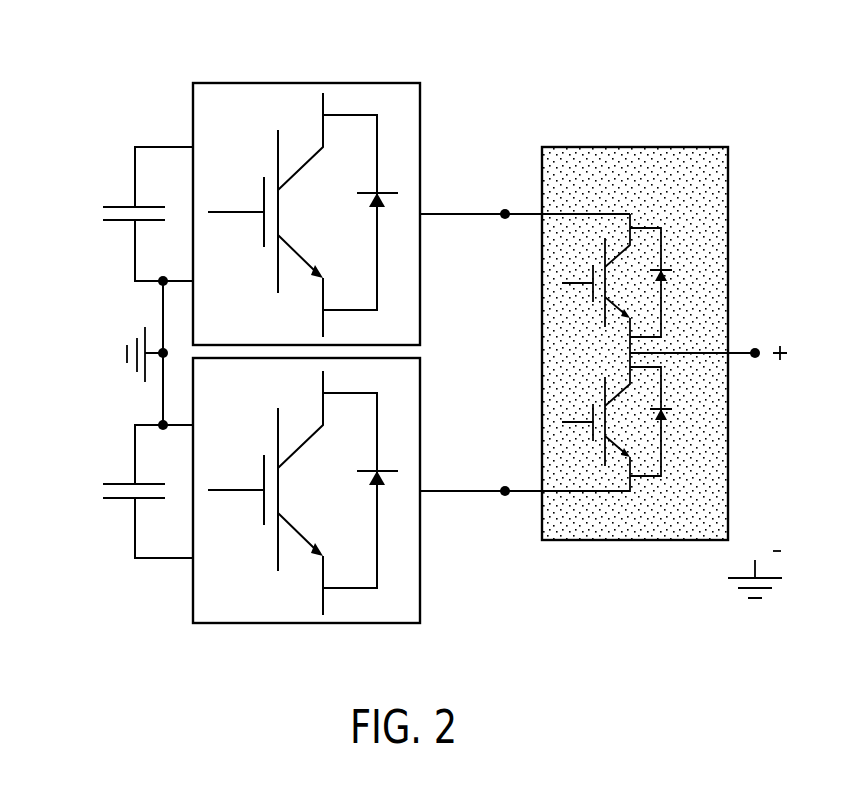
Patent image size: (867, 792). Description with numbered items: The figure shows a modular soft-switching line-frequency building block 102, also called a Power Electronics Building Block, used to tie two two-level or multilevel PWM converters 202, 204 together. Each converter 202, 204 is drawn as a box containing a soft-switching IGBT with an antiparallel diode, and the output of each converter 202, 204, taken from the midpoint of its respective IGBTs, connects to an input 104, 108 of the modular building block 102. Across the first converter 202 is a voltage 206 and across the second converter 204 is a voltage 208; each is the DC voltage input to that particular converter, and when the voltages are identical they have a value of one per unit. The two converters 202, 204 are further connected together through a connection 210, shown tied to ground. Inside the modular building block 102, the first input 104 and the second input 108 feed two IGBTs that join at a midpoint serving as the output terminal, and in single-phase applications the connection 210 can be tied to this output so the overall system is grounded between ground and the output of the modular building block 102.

The modular building block 102 is at (683, 147).
The first input 104 is at (505, 206).
The second input 108 is at (505, 483).
The two-level converter 202 is at (233, 83).
The two-level converter 204 is at (233, 623).
The voltage 206 is at (102, 147).
The voltage 208 is at (102, 425).
The connection 210 is at (163, 303).